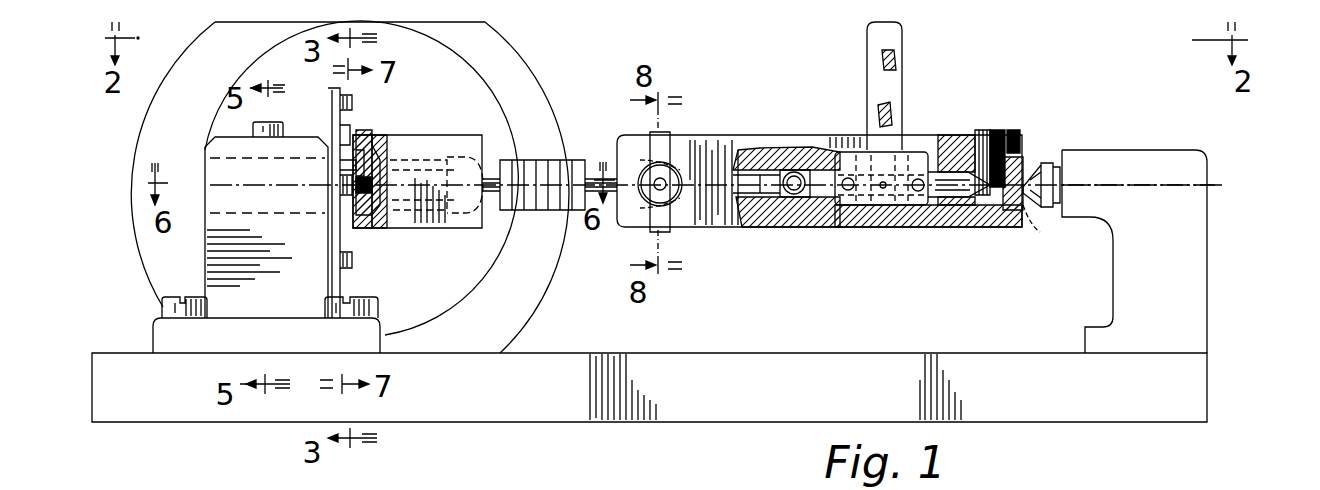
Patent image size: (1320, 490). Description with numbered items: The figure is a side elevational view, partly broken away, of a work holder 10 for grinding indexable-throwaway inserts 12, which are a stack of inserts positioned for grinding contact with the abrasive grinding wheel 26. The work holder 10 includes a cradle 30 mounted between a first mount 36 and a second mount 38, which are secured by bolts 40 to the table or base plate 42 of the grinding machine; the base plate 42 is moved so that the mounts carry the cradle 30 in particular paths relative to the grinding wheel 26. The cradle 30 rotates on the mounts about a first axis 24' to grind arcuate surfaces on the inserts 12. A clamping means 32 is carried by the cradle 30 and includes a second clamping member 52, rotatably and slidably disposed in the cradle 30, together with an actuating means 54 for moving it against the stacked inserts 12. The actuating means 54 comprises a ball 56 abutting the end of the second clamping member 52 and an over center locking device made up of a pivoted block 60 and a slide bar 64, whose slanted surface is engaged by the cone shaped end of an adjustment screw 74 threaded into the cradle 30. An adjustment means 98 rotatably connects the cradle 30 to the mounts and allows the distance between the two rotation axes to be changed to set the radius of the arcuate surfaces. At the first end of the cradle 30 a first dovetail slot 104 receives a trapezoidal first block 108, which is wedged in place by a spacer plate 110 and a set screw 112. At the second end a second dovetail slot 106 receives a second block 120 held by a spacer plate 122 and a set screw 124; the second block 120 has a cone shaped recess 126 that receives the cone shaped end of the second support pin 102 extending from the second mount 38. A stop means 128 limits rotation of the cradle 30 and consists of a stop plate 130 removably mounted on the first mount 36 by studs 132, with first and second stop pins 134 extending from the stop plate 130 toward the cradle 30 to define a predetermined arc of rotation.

The work holder 10 is at (964, 91).
The indexable-throwaway inserts 12 is at (575, 156).
The first axis 24' is at (1134, 162).
The abrasive grinding wheel 26 is at (526, 72).
The cradle 30 is at (755, 135).
The clamping means 32 is at (599, 156).
The first mount 36 is at (205, 265).
The second mount 38 is at (1210, 288).
The bolts 40 is at (162, 306).
The base plate 42 is at (153, 403).
The second clamping member 52 is at (762, 193).
The actuating means 54 is at (858, 136).
The ball 56 is at (795, 172).
The block 60 is at (907, 154).
The slide bar 64 is at (950, 205).
The adjustment screw 74 is at (985, 134).
The adjustment means 98 is at (375, 131).
The second support pin 102 is at (1029, 170).
The first dovetail slot 104 is at (364, 225).
The second dovetail slot 106 is at (1005, 212).
The first block 108 is at (389, 156).
The spacer plate 110 is at (372, 141).
The set screw 112 is at (357, 133).
The second block 120 is at (980, 210).
The spacer plate 122 is at (1033, 155).
The set screw 124 is at (1010, 133).
The cone shaped recess 126 is at (1023, 207).
The stop means 128 is at (325, 99).
The stop plate 130 is at (329, 231).
The studs 132 is at (357, 161).
The stop pins 134 is at (350, 100).